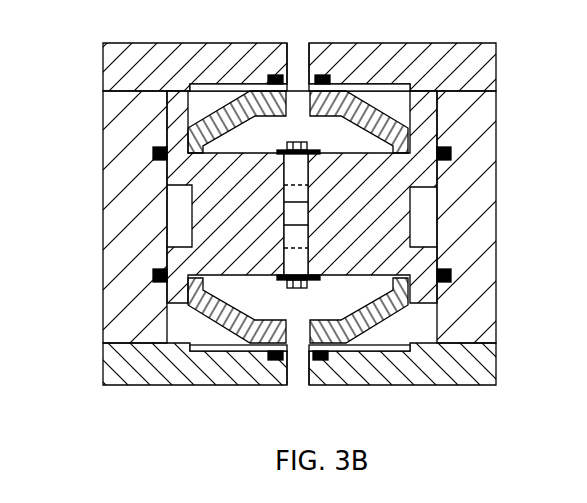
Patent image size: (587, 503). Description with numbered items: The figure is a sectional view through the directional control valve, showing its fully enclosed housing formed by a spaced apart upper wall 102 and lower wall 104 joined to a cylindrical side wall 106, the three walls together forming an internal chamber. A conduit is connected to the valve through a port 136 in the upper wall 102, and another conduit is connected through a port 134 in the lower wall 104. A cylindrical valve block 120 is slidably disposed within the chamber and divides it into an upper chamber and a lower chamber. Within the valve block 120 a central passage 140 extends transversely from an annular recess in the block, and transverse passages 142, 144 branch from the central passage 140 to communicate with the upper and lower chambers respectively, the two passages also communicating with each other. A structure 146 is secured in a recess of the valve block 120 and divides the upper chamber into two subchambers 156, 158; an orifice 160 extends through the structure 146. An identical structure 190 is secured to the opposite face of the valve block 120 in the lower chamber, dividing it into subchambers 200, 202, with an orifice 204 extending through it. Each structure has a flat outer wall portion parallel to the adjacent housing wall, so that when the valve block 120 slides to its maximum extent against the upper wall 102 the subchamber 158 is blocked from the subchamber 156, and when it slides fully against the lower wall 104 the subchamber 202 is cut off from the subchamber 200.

The upper wall 102 is at (433, 55).
The lower wall 104 is at (373, 380).
The side wall 106 is at (110, 210).
The valve block 120 is at (385, 242).
The port 134 is at (297, 377).
The port 136 is at (297, 52).
The central passage 140 is at (295, 217).
The transverse passage 142 is at (295, 172).
The transverse passage 144 is at (318, 282).
The structure 146 is at (375, 106).
The subchamber 156 is at (182, 108).
The subchamber 158 is at (256, 120).
The orifice 160 is at (303, 88).
The structure 190 is at (378, 310).
The subchamber 200 is at (420, 333).
The subchamber 202 is at (230, 287).
The orifice 204 is at (286, 335).